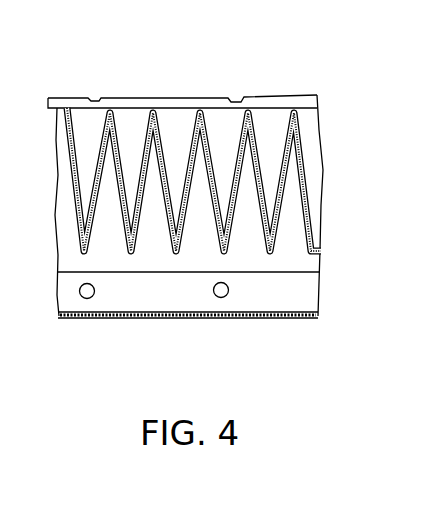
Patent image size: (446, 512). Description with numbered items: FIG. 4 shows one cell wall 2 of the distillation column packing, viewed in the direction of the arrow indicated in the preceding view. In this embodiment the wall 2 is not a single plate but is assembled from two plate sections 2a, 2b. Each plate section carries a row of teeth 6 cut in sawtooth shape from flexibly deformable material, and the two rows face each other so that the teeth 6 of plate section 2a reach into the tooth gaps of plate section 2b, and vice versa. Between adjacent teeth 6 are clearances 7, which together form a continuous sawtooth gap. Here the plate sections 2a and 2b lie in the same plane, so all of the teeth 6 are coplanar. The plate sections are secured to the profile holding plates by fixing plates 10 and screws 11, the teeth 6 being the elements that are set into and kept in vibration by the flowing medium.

The wall 2 is at (107, 92).
The plate section 2a is at (176, 112).
The plate section 2b is at (290, 255).
The teeth 6 is at (177, 132).
The clearances 7 is at (139, 205).
The fixing plates 10 is at (67, 302).
The screws 11 is at (87, 299).